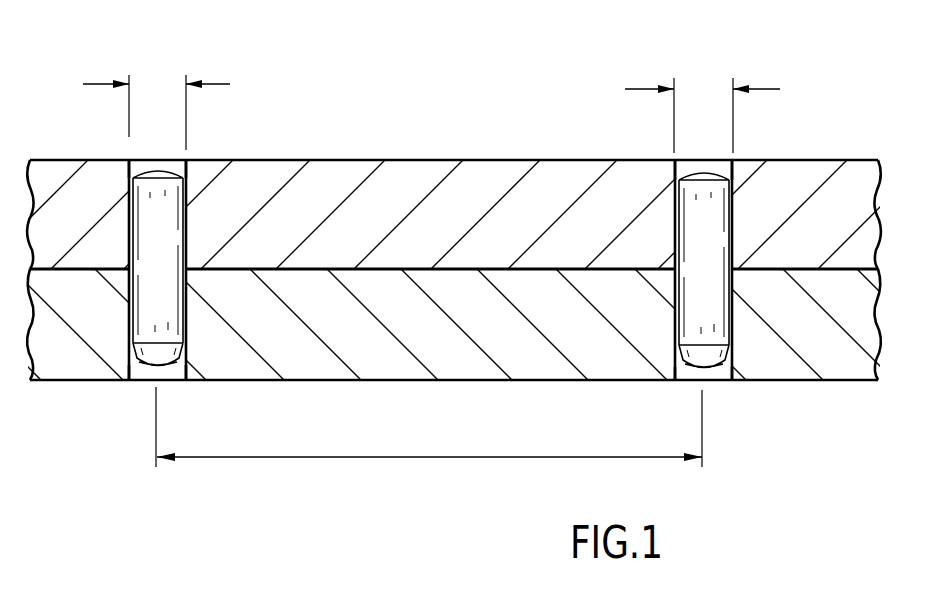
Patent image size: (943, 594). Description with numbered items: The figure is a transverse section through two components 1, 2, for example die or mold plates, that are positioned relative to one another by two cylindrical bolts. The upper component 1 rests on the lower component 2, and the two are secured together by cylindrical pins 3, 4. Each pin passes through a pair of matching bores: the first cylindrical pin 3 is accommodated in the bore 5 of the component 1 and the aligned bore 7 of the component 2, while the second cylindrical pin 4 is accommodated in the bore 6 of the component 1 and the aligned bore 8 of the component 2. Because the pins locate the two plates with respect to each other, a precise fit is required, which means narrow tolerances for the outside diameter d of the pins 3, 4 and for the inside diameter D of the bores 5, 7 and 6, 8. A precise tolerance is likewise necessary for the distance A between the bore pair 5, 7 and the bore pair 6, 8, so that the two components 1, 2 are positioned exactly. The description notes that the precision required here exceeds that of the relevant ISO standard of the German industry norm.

The component 1 is at (427, 168).
The component 2 is at (462, 372).
The cylindrical pin 3 is at (172, 200).
The cylindrical pin 4 is at (718, 200).
The bore 5 is at (144, 166).
The bore 6 is at (688, 167).
The bore 7 is at (137, 375).
The bore 8 is at (722, 375).
The inside diameter D is at (162, 82).
The outside diameter d is at (705, 83).
The distance A is at (430, 458).